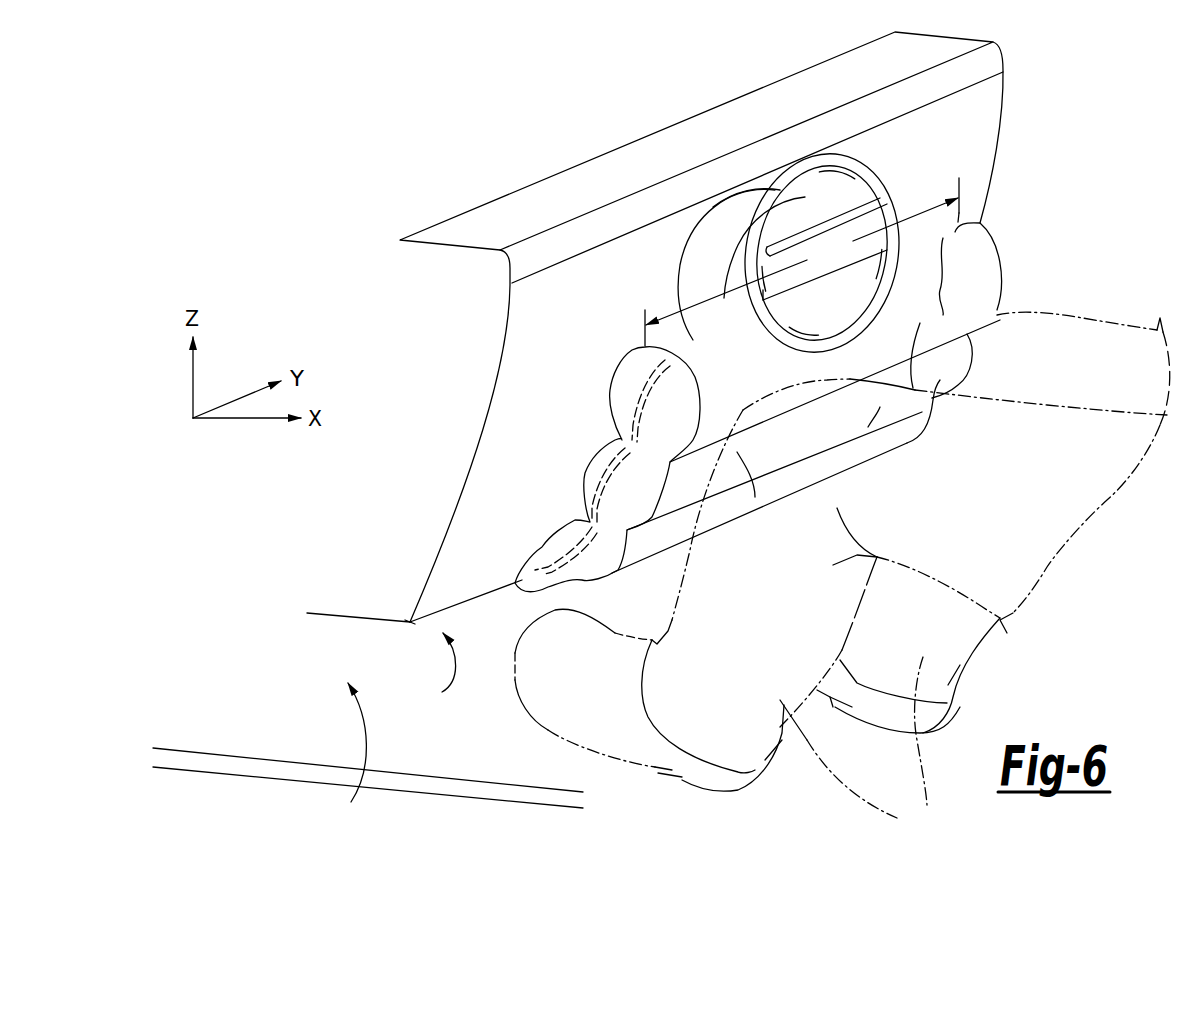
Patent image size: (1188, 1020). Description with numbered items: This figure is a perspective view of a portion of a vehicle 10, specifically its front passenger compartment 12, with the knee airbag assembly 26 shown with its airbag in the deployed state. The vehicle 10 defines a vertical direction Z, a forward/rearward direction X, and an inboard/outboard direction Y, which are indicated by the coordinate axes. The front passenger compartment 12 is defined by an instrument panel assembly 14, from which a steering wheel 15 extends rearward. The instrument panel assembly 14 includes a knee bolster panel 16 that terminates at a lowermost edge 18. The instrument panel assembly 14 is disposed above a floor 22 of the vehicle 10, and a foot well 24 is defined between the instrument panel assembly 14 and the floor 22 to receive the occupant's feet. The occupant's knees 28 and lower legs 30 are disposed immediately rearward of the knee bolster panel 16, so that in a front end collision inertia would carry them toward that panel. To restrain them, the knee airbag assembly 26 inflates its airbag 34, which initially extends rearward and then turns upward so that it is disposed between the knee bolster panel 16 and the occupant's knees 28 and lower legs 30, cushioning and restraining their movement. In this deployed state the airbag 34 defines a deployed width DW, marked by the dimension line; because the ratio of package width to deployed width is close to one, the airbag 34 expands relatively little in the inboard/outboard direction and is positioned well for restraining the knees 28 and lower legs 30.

The vehicle 10 is at (527, 152).
The front passenger compartment 12 is at (1041, 200).
The instrument panel assembly 14 is at (972, 106).
The steering wheel 15 is at (888, 217).
The knee bolster panel 16 is at (565, 315).
The lowermost edge 18 is at (410, 625).
The floor 22 is at (454, 779).
The foot well 24 is at (352, 757).
The knee airbag assembly 26 is at (437, 675).
The knees 28 is at (746, 408).
The lower legs 30 is at (897, 818).
The airbag 34 is at (625, 600).